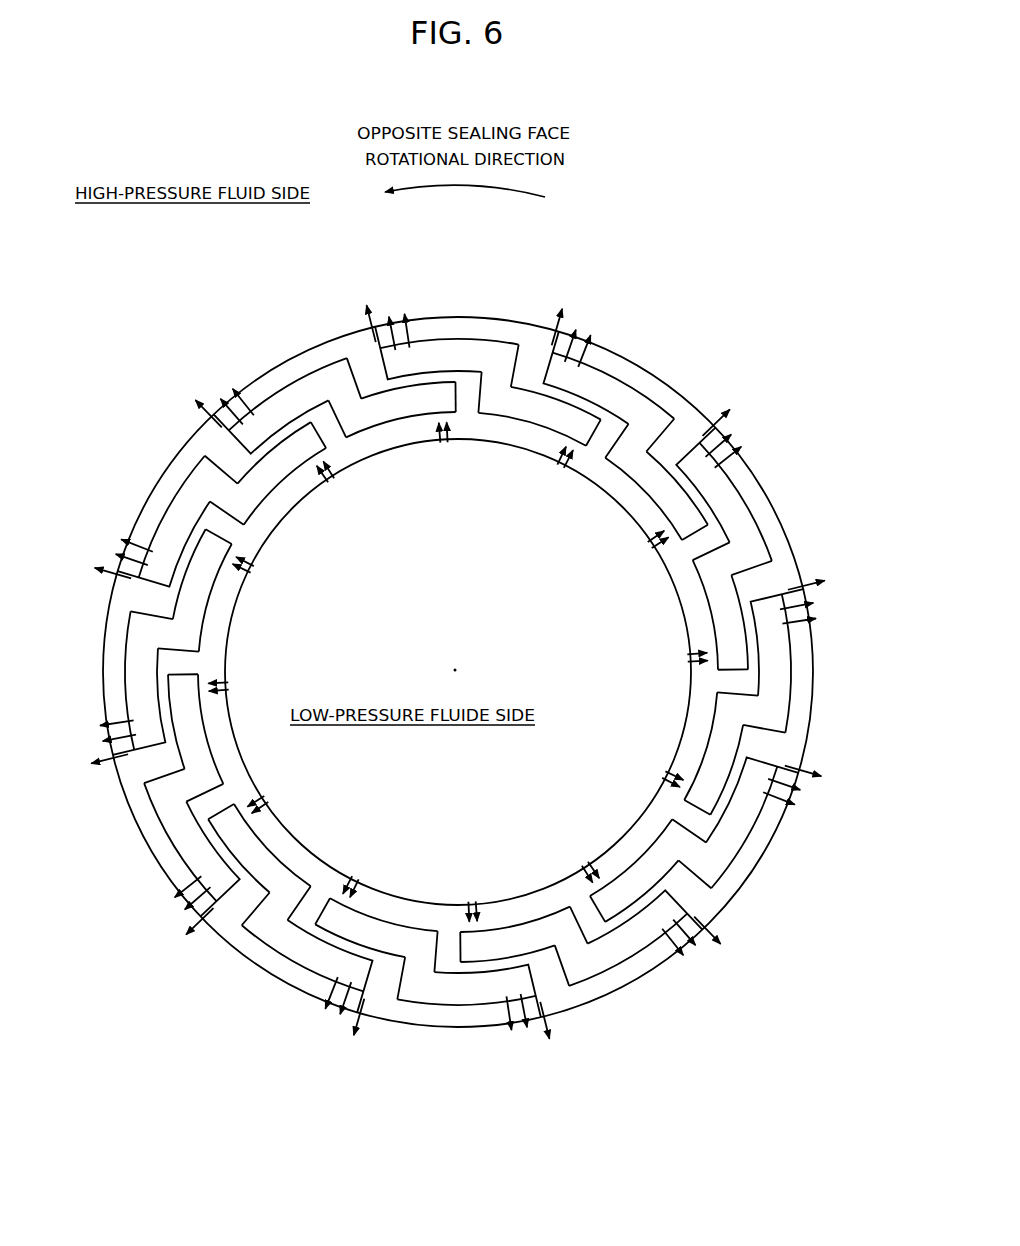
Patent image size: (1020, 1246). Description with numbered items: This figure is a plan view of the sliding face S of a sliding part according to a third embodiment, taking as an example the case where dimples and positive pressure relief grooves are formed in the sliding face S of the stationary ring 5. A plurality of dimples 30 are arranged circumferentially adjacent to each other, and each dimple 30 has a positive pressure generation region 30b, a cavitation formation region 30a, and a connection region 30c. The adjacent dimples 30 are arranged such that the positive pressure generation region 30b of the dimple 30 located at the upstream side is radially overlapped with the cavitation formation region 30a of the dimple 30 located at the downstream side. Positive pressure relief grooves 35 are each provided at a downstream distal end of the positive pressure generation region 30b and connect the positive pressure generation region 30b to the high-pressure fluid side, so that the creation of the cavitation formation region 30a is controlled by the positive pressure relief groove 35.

The stationary ring 5 is at (650, 373).
The sliding face S is at (672, 402).
The dimple 30 is at (476, 658).
The cavitation formation region 30a is at (437, 402).
The positive pressure generation region 30b is at (700, 472).
The connection region 30c is at (785, 562).
The positive pressure relief groove 35 is at (712, 432).